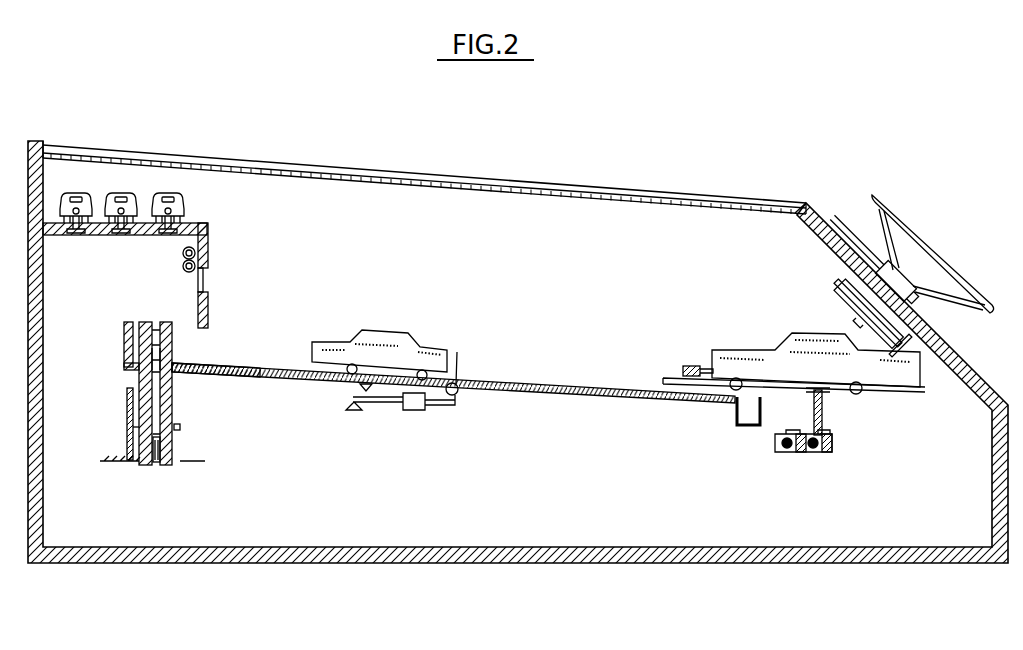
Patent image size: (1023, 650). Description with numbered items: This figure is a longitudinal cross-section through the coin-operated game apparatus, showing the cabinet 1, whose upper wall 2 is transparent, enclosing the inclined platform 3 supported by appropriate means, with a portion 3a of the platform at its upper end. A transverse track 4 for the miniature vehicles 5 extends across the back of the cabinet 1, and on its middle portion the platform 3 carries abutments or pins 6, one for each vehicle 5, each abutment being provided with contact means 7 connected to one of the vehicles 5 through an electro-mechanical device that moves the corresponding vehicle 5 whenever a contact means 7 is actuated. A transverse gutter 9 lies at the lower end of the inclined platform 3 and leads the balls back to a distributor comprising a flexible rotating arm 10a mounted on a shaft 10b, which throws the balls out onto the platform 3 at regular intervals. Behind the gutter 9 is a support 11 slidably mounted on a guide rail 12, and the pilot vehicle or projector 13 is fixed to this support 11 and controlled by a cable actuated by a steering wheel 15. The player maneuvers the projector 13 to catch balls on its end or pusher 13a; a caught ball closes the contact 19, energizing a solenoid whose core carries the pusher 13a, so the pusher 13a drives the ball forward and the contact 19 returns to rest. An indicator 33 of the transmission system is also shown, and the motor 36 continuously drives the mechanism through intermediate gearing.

The cabinet 1 is at (38, 490).
The top wall 2 is at (360, 172).
The inclined platform 3 is at (527, 384).
The loading platform 3a is at (215, 364).
The transverse track 4 is at (206, 225).
The miniature vehicles 5 is at (70, 193).
The abutments or pins 6 is at (385, 345).
The contact means 7 is at (450, 405).
The transverse gutter 9 is at (750, 410).
The flexible rotating arm 10a is at (160, 460).
The shaft 10b is at (180, 428).
The support 11 is at (822, 412).
The guide rail 12 is at (806, 452).
The pilot vehicle 13 is at (758, 364).
The pusher 13a is at (692, 365).
The steering wheel 15 is at (940, 258).
The contact 19 is at (665, 379).
The indicator 33 is at (205, 284).
The motor 36 is at (128, 425).